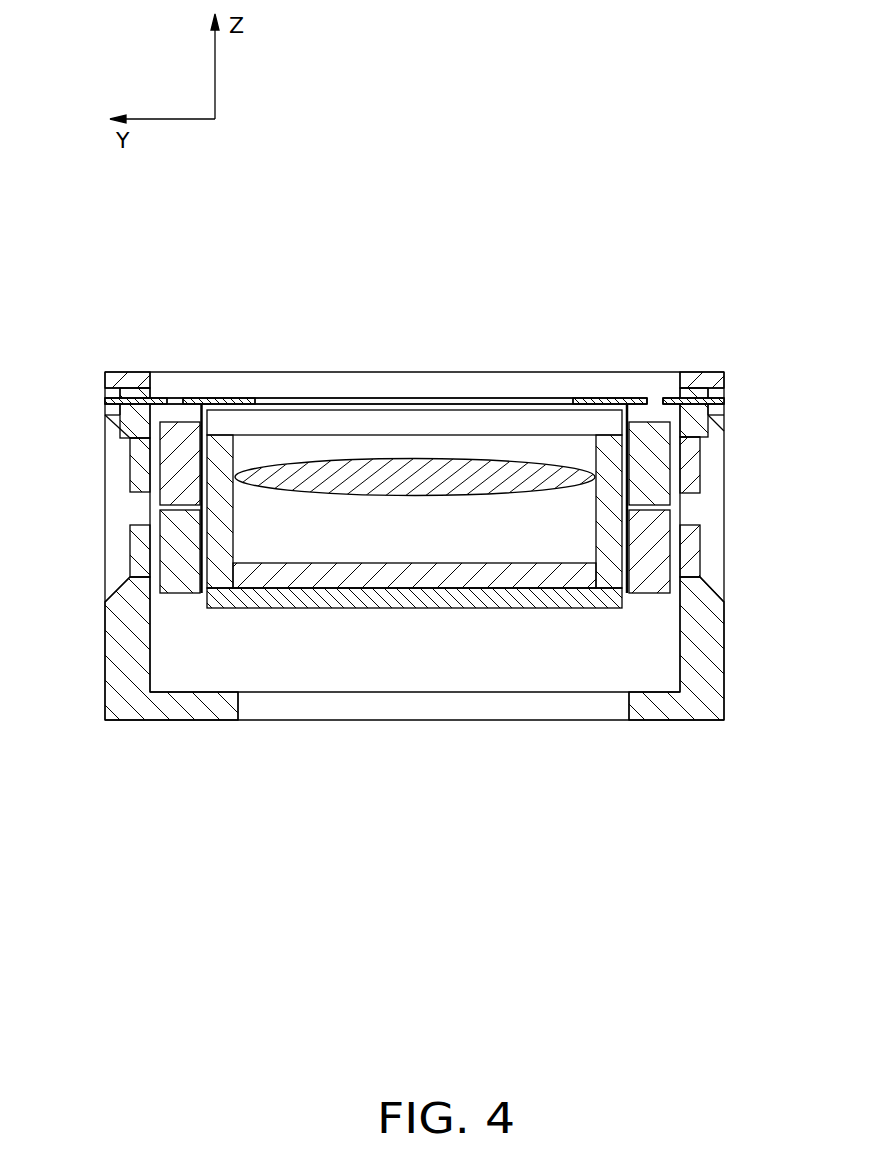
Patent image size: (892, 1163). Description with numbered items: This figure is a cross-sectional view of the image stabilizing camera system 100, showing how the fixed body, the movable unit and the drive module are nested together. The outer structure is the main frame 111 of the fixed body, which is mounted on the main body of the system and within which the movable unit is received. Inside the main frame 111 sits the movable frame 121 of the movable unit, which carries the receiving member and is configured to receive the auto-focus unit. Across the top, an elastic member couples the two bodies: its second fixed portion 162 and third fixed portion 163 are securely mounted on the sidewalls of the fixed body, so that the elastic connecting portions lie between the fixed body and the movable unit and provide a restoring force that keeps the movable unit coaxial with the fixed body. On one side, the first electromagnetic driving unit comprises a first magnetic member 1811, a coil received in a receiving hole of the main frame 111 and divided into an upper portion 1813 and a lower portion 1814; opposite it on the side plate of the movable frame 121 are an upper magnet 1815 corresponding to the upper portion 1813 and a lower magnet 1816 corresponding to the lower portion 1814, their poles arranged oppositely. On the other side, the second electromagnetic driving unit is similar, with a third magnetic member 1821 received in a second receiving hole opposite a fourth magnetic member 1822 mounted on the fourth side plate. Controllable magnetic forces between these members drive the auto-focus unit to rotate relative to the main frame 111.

The image stabilizing camera system 100 is at (401, 235).
The main frame 111 is at (118, 667).
The movable frame 121 is at (203, 418).
The second fixed portion 162 is at (692, 396).
The third fixed portion 163 is at (138, 398).
The first magnetic member 1811 is at (784, 463).
The upper portion 1813 is at (700, 477).
The lower portion 1814 is at (700, 558).
The upper magnet 1815 is at (648, 470).
The lower magnet 1816 is at (658, 581).
The third magnetic member 1821 is at (137, 462).
The fourth magnetic member 1822 is at (185, 482).